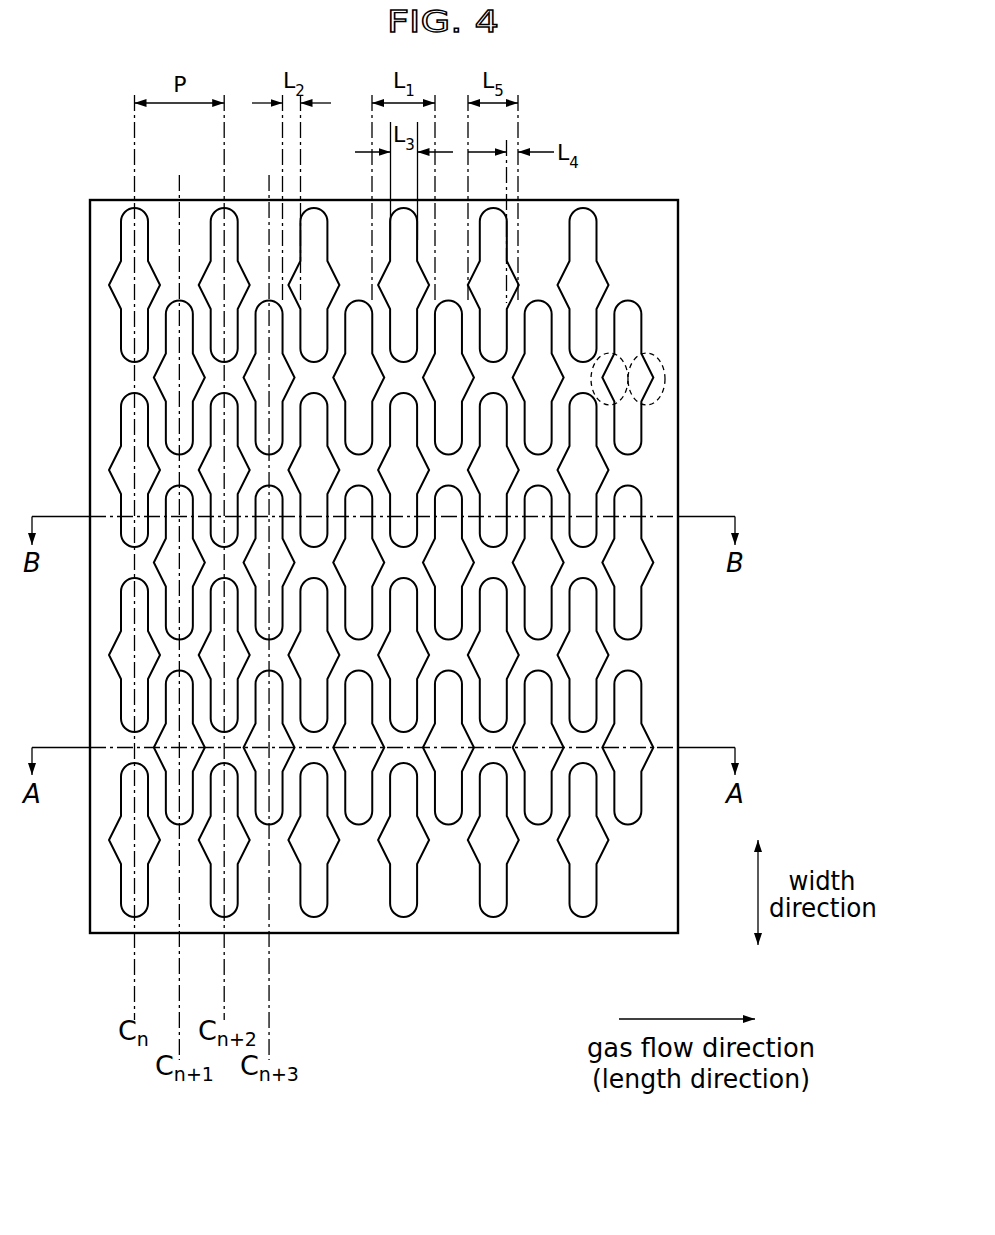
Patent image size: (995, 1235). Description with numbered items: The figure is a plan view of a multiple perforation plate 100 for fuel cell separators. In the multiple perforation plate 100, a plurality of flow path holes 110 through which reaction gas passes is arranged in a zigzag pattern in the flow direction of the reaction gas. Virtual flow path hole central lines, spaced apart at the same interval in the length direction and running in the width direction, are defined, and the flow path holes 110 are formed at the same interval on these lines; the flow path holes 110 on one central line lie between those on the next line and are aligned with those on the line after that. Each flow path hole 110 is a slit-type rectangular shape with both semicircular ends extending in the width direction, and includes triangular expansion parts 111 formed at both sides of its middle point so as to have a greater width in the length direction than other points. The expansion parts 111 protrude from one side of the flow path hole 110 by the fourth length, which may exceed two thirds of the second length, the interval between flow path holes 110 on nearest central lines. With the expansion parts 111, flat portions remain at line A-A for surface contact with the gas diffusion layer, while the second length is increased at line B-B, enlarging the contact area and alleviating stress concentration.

The multiple perforation plate 100 is at (681, 176).
The flow path hole 110 is at (588, 665).
The expansion part 111 is at (607, 353).